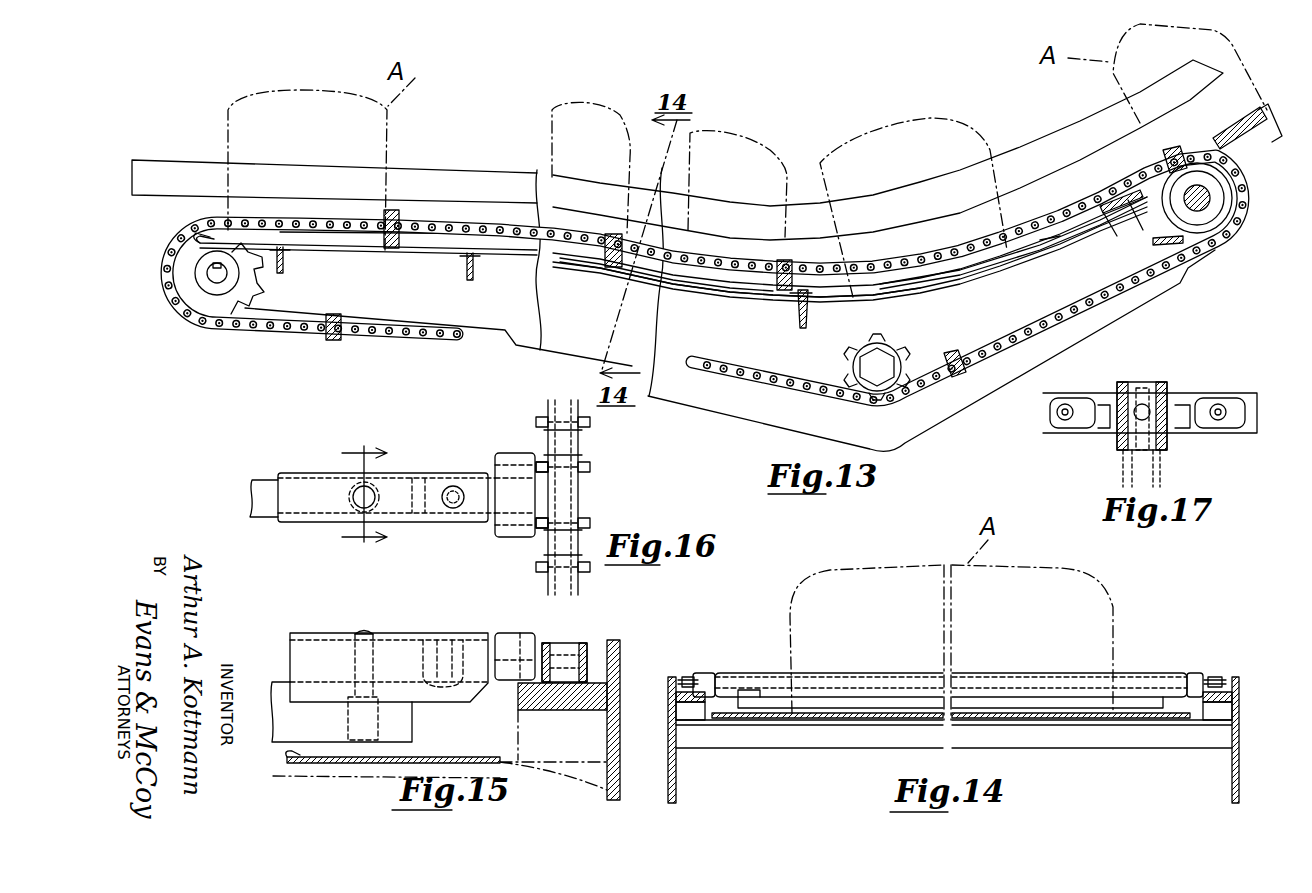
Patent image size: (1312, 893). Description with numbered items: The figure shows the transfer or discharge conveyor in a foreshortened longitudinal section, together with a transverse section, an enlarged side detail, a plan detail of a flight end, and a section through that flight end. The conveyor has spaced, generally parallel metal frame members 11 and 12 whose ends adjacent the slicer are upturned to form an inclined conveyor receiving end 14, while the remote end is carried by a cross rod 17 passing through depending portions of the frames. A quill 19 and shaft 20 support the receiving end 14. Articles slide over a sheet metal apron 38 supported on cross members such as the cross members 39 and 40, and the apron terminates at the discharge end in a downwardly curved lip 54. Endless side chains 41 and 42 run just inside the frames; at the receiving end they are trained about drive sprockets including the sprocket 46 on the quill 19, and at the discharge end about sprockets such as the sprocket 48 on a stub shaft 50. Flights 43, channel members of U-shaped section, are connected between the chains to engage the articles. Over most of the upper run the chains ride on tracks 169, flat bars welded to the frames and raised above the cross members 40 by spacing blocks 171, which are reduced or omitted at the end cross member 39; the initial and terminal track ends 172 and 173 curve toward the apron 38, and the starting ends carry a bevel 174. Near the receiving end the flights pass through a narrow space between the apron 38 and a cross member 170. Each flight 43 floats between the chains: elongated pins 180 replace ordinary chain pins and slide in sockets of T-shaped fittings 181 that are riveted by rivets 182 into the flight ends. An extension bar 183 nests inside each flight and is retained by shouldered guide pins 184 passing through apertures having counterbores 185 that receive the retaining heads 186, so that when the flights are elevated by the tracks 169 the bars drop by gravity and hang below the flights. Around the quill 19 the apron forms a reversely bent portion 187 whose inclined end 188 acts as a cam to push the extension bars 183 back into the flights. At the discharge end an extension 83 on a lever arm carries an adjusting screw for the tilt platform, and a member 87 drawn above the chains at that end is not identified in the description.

In FIG. 14, the frame member 11 is at (677, 780).
In FIG. 13, the frame member 12 is at (770, 414).
In FIG. 15, the frame member 12 is at (620, 767).
In FIG. 14, the frame member 12 is at (1239, 767).
In FIG. 13, the conveyor receiving end 14 is at (1047, 243).
In FIG. 16, the cross rod 17 is at (364, 496).
In FIG. 13, the quill 19 is at (1224, 222).
In FIG. 13, the shaft 20 is at (1200, 250).
In FIG. 13, the sheet metal apron 38 is at (727, 297).
In FIG. 15, the sheet metal apron 38 is at (287, 754).
In FIG. 14, the sheet metal apron 38 is at (1177, 718).
In FIG. 13, the cross member 39 is at (284, 260).
In FIG. 13, the cross member 40 is at (471, 274).
In FIG. 15, the cross member 40 is at (345, 777).
In FIG. 14, the cross member 40 is at (813, 740).
In FIG. 14, the side chain 41 is at (693, 673).
In FIG. 13, the side chain 42 is at (427, 217).
In FIG. 17, the side chain 42 is at (1237, 393).
In FIG. 16, the side chain 42 is at (317, 523).
In FIG. 15, the side chain 42 is at (587, 645).
In FIG. 14, the side chain 42 is at (1213, 673).
In FIG. 13, the flight 43 is at (600, 233).
In FIG. 17, the flight 43 is at (1165, 395).
In FIG. 14, the flight 43 is at (877, 672).
In FIG. 13, the drive sprocket 46 is at (1163, 183).
In FIG. 13, the sprocket 48 is at (208, 298).
In FIG. 13, the stub shaft 50 is at (209, 277).
In FIG. 13, the downwardly curved lip 54 is at (200, 242).
In FIG. 13, the extension 83 is at (399, 240).
In FIG. 13, the bar 87 is at (187, 166).
In FIG. 13, the track 169 is at (717, 280).
In FIG. 15, the track 169 is at (543, 703).
In FIG. 14, the track 169 is at (670, 703).
In FIG. 13, the cross member 170 is at (1233, 124).
In FIG. 13, the spacing block 171 is at (484, 240).
In FIG. 15, the spacing block 171 is at (521, 766).
In FIG. 14, the spacing block 171 is at (695, 713).
In FIG. 13, the initial track end 172 is at (1020, 262).
In FIG. 13, the terminal track end 173 is at (345, 235).
In FIG. 13, the bevel 174 is at (1120, 197).
In FIG. 16, the elongated pin 180 is at (590, 467).
In FIG. 15, the elongated pin 180 is at (513, 653).
In FIG. 17, the T-shaped fitting 181 is at (1103, 420).
In FIG. 16, the T-shaped fitting 181 is at (507, 538).
In FIG. 15, the T-shaped fitting 181 is at (510, 635).
In FIG. 14, the T-shaped fitting 181 is at (708, 673).
In FIG. 16, the rivet 182 is at (455, 485).
In FIG. 15, the rivet 182 is at (442, 652).
In FIG. 13, the extension bar 183 is at (610, 268).
In FIG. 17, the extension bar 183 is at (1125, 392).
In FIG. 15, the extension bar 183 is at (407, 727).
In FIG. 14, the extension bar 183 is at (1048, 700).
In FIG. 17, the shouldered guide pin 184 is at (1162, 440).
In FIG. 16, the shouldered guide pin 184 is at (353, 490).
In FIG. 15, the shouldered guide pin 184 is at (352, 655).
In FIG. 17, the counterbore 185 is at (1127, 455).
In FIG. 15, the counterbore 185 is at (355, 724).
In FIG. 17, the retaining head 186 is at (1160, 470).
In FIG. 13, the reversely bent portion 187 is at (1250, 190).
In FIG. 13, the end 188 is at (1160, 243).